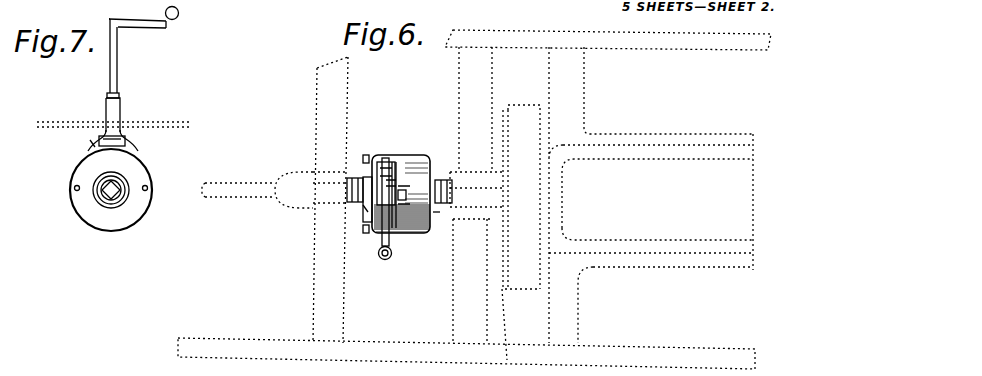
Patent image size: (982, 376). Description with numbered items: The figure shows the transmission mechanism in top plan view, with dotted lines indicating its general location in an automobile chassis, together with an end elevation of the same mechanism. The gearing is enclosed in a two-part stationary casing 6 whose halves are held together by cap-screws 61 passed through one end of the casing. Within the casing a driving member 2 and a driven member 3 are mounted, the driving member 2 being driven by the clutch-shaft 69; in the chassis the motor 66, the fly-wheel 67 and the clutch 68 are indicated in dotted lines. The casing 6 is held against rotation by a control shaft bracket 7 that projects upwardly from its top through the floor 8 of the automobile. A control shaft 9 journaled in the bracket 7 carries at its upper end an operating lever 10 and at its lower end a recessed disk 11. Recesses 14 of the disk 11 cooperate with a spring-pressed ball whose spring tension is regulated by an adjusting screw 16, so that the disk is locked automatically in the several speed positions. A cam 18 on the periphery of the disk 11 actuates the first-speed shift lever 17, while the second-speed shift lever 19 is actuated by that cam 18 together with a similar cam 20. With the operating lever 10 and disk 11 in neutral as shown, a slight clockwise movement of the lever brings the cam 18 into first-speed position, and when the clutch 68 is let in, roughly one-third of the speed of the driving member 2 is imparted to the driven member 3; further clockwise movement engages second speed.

In FIG. 6, the driving member 2 is at (443, 182).
In FIG. 7, the driven member 3 is at (109, 202).
In FIG. 6, the driven member 3 is at (355, 180).
In FIG. 7, the stationary casing 6 is at (136, 220).
In FIG. 6, the stationary casing 6 is at (416, 196).
In FIG. 7, the control shaft bracket 7 is at (121, 120).
In FIG. 6, the control shaft bracket 7 is at (380, 165).
In FIG. 7, the floor 8 is at (172, 122).
In FIG. 7, the control shaft 9 is at (117, 68).
In FIG. 7, the operating lever 10 is at (155, 27).
In FIG. 6, the operating lever 10 is at (380, 250).
In FIG. 7, the recessed disk 11 is at (90, 141).
In FIG. 6, the recessed disk 11 is at (362, 208).
In FIG. 6, the recesses 14 is at (393, 183).
In FIG. 7, the adjusting screw 16 is at (104, 134).
In FIG. 6, the adjusting screw 16 is at (389, 168).
In FIG. 6, the first-speed shift lever 17 is at (410, 195).
In FIG. 6, the cam 18 is at (402, 192).
In FIG. 6, the second-speed shift lever 19 is at (408, 238).
In FIG. 7, the cam 20 is at (127, 142).
In FIG. 7, the cap-screws 61 is at (74, 188).
In FIG. 6, the cap-screws 61 is at (365, 228).
In FIG. 6, the motor 66 is at (662, 262).
In FIG. 6, the fly-wheel 67 is at (521, 296).
In FIG. 6, the clutch 68 is at (516, 332).
In FIG. 6, the clutch-shaft 69 is at (440, 214).